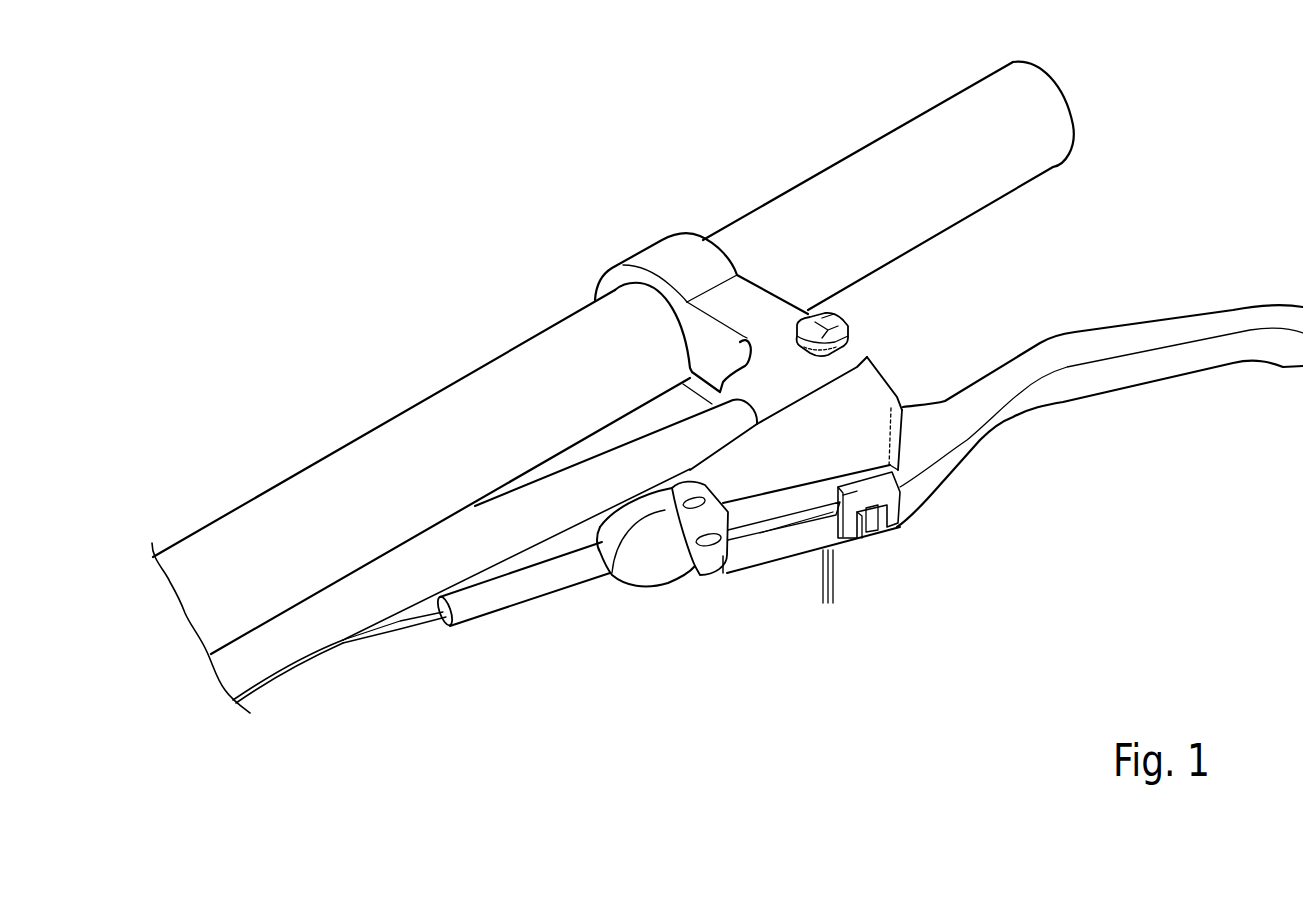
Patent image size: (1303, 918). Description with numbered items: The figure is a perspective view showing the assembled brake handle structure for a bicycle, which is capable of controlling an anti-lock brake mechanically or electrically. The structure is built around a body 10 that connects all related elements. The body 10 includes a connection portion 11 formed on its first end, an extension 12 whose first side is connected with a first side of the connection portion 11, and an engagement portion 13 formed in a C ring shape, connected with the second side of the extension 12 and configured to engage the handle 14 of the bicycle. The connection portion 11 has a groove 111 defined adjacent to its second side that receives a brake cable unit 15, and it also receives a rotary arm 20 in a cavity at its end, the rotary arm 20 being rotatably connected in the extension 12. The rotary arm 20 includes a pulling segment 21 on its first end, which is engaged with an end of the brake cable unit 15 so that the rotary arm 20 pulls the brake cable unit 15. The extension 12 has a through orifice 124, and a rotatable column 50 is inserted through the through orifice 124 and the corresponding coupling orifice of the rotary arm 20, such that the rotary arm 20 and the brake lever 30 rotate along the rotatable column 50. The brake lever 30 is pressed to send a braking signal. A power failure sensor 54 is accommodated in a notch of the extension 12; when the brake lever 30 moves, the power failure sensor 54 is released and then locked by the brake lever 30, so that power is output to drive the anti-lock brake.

The body 10 is at (778, 290).
The connection portion 11 is at (763, 472).
The groove 111 is at (753, 533).
The extension 12 is at (840, 357).
The through orifice 124 is at (838, 313).
The engagement portion 13 is at (667, 253).
The handle 14 is at (549, 355).
The brake cable unit 15 is at (483, 600).
The rotary arm 20 is at (877, 538).
The pulling segment 21 is at (888, 522).
The brake lever 30 is at (1177, 383).
The rotatable column 50 is at (854, 332).
The power failure sensor 54 is at (597, 480).